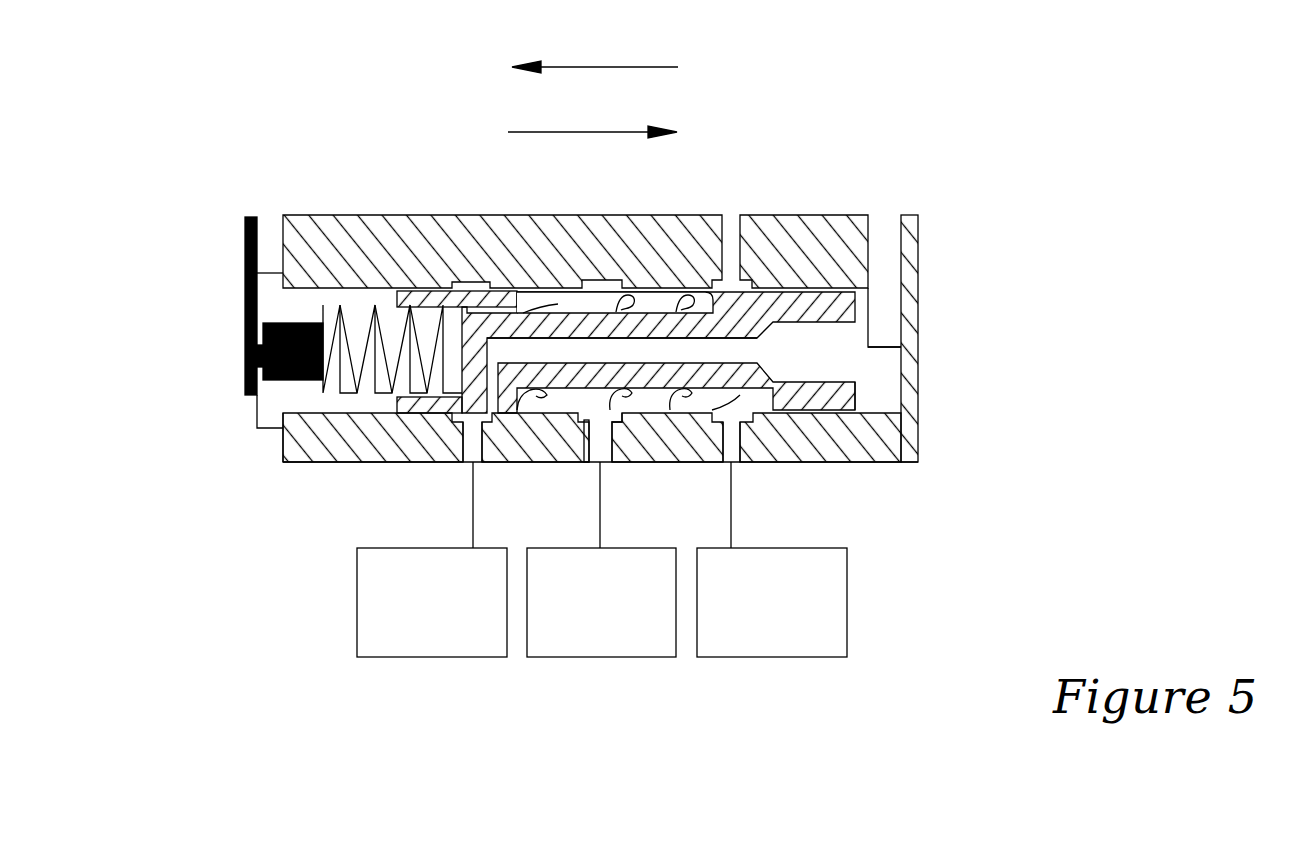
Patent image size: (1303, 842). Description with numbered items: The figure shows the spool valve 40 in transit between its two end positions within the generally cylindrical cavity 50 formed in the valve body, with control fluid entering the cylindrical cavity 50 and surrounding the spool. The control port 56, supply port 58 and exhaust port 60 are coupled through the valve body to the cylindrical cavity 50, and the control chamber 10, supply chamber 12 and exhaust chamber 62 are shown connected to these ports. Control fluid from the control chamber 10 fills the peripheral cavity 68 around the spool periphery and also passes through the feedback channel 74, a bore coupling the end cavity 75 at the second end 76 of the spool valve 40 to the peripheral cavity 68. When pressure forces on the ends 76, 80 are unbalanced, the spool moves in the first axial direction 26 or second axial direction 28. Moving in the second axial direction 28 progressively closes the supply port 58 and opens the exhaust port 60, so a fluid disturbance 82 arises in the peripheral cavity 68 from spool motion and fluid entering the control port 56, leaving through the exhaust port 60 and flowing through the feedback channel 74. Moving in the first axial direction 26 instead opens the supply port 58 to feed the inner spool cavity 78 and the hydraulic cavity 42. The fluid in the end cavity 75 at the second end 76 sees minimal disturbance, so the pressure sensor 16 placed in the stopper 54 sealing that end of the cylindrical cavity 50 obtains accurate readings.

The control chamber 10 is at (653, 647).
The supply chamber 12 is at (488, 647).
The pressure sensor 16 is at (246, 374).
The first axial direction 26 is at (595, 52).
The second axial direction 28 is at (592, 117).
The spool valve 40 is at (828, 403).
The hydraulic cavity 42 is at (885, 317).
The cylindrical cavity 50 is at (875, 370).
The stopper 54 is at (277, 412).
The control port 56 is at (618, 452).
The supply port 58 is at (472, 452).
The exhaust port 60 is at (737, 452).
The exhaust chamber 62 is at (825, 647).
The peripheral cavity 68 is at (587, 445).
The feedback channel 74 is at (487, 307).
The end cavity 75 is at (333, 400).
The second end of the spool valve 76 is at (487, 327).
The inner spool cavity 78 is at (642, 350).
The end of the spool valve 80 is at (870, 308).
The fluid disturbance 82 is at (600, 302).